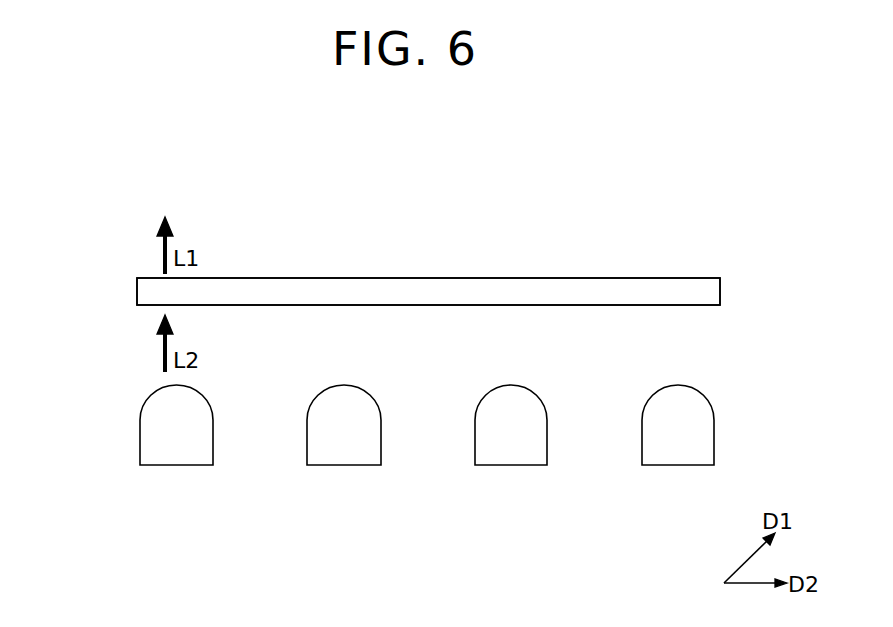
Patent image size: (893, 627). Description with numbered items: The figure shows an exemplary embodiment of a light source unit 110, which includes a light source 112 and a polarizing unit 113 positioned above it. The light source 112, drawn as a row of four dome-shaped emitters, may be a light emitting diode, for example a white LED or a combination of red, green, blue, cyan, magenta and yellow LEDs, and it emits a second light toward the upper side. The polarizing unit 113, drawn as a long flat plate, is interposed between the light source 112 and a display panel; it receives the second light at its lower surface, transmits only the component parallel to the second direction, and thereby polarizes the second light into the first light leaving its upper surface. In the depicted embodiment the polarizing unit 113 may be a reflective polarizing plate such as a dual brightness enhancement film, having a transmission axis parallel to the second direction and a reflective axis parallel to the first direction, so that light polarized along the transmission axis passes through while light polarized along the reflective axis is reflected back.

The light source unit 110 is at (729, 226).
The light source 112 is at (115, 436).
The polarizing unit 113 is at (115, 290).